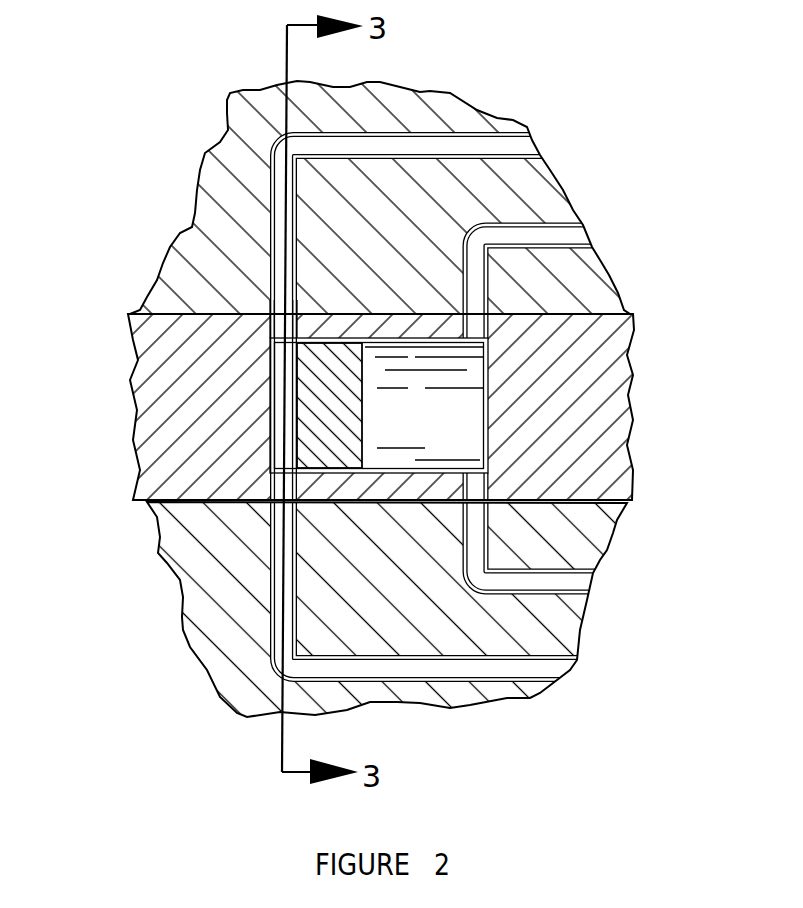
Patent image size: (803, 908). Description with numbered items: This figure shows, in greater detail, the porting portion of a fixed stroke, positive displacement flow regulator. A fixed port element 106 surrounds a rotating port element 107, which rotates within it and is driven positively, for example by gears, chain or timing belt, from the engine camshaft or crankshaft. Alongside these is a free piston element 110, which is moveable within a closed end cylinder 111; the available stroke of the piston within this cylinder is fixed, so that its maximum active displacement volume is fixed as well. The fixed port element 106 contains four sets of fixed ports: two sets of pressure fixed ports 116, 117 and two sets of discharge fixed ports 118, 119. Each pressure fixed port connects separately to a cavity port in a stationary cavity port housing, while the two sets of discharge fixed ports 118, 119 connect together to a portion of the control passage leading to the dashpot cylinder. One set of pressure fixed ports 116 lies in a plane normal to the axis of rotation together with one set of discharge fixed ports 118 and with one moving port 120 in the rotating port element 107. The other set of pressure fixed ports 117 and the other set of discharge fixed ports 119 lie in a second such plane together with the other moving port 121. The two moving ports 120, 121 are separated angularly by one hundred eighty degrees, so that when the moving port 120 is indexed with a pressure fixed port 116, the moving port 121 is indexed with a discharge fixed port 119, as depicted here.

The fixed port element 106 is at (598, 258).
The rotating port element 107 is at (632, 355).
The free piston element 110 is at (320, 408).
The closed end cylinder 111 is at (422, 425).
The pressure fixed ports 116 is at (267, 310).
The pressure fixed ports 117 is at (475, 300).
The discharge fixed ports 118 is at (278, 582).
The discharge fixed ports 119 is at (473, 518).
The moving port 120 is at (268, 311).
The moving port 121 is at (482, 488).